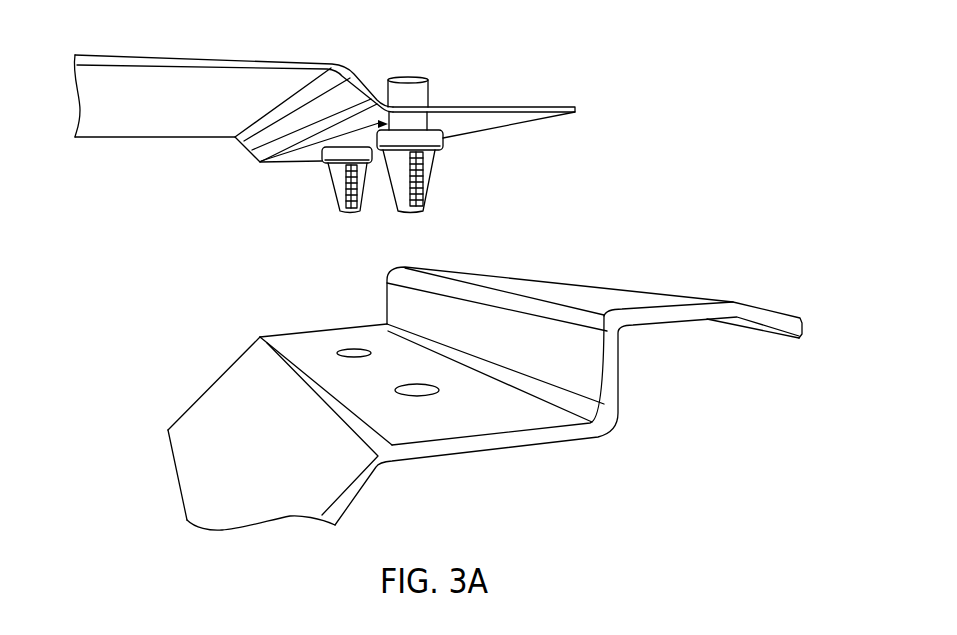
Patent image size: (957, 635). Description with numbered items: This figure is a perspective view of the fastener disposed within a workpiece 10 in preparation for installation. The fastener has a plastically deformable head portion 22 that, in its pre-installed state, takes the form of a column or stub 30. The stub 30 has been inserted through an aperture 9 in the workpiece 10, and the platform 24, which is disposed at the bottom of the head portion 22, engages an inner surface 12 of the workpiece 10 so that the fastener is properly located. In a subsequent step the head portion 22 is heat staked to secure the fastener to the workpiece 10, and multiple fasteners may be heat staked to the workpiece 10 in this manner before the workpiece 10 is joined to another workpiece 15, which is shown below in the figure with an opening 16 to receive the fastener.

The aperture 9 is at (260, 162).
The workpiece 10 is at (160, 120).
The inner surface 12 is at (518, 119).
The workpiece 15 is at (485, 398).
The aperture 16 is at (407, 380).
The head portion 22 is at (422, 115).
The platform 24 is at (438, 142).
The stub 30 is at (422, 97).